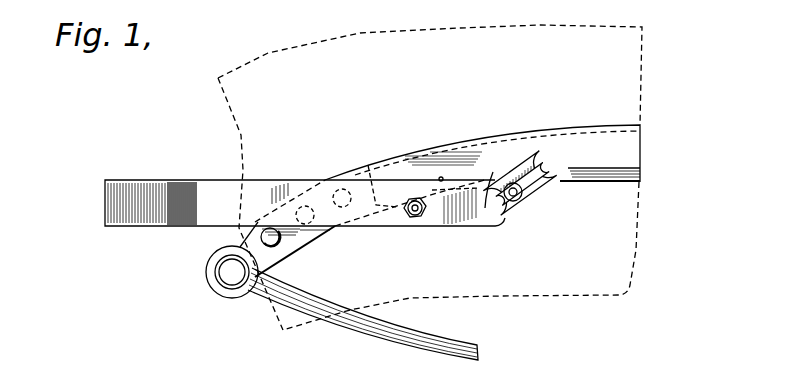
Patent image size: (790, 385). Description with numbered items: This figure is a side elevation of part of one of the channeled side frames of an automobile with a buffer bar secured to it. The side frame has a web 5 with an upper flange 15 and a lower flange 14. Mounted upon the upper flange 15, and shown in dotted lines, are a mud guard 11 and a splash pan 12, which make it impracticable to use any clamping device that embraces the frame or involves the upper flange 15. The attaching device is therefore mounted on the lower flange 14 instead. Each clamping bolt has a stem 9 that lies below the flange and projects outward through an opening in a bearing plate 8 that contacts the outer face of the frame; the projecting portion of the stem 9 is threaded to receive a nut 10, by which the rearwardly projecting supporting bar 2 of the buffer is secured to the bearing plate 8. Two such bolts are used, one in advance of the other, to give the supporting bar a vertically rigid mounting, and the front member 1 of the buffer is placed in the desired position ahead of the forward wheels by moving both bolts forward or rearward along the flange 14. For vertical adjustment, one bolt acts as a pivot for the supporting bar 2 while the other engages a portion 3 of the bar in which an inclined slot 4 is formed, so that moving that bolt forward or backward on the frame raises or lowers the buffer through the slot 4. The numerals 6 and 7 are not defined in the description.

The front member of the buffer 1 is at (158, 205).
The supporting bar 2 is at (452, 203).
The portion of the bar 3 is at (398, 140).
The inclined slot 4 is at (503, 210).
The web 5 is at (620, 168).
The pivot hub 6 is at (228, 273).
The leaf spring 7 is at (322, 287).
The bearing plate 8 is at (493, 175).
The stem of the bolt 9 is at (518, 200).
The nut 10 is at (530, 193).
The mud guard 11 is at (625, 81).
The splash pan 12 is at (632, 258).
The lower flange 14 is at (641, 180).
The upper flange 15 is at (643, 127).